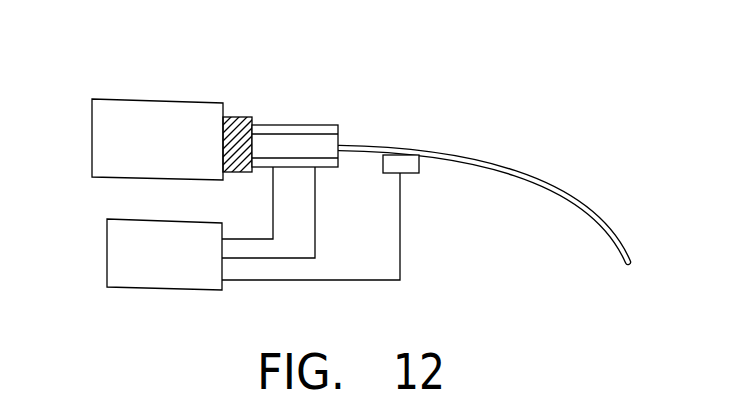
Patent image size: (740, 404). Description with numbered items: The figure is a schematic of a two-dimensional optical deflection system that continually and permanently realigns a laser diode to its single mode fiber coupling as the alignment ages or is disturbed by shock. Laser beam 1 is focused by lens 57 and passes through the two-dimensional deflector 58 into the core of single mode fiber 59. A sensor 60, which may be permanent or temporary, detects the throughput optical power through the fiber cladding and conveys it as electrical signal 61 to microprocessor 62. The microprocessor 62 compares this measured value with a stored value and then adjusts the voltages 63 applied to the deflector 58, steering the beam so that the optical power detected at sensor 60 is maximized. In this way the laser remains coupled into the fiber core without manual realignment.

The laser beam 1 is at (157, 139).
The lens 57 is at (238, 115).
The 2-D deflector 58 is at (293, 123).
The single mode fiber 59 is at (585, 208).
The sensor 60 is at (470, 153).
The electrical signal 61 is at (403, 217).
The microprocessor 62 is at (164, 254).
The voltages 63 is at (268, 212).